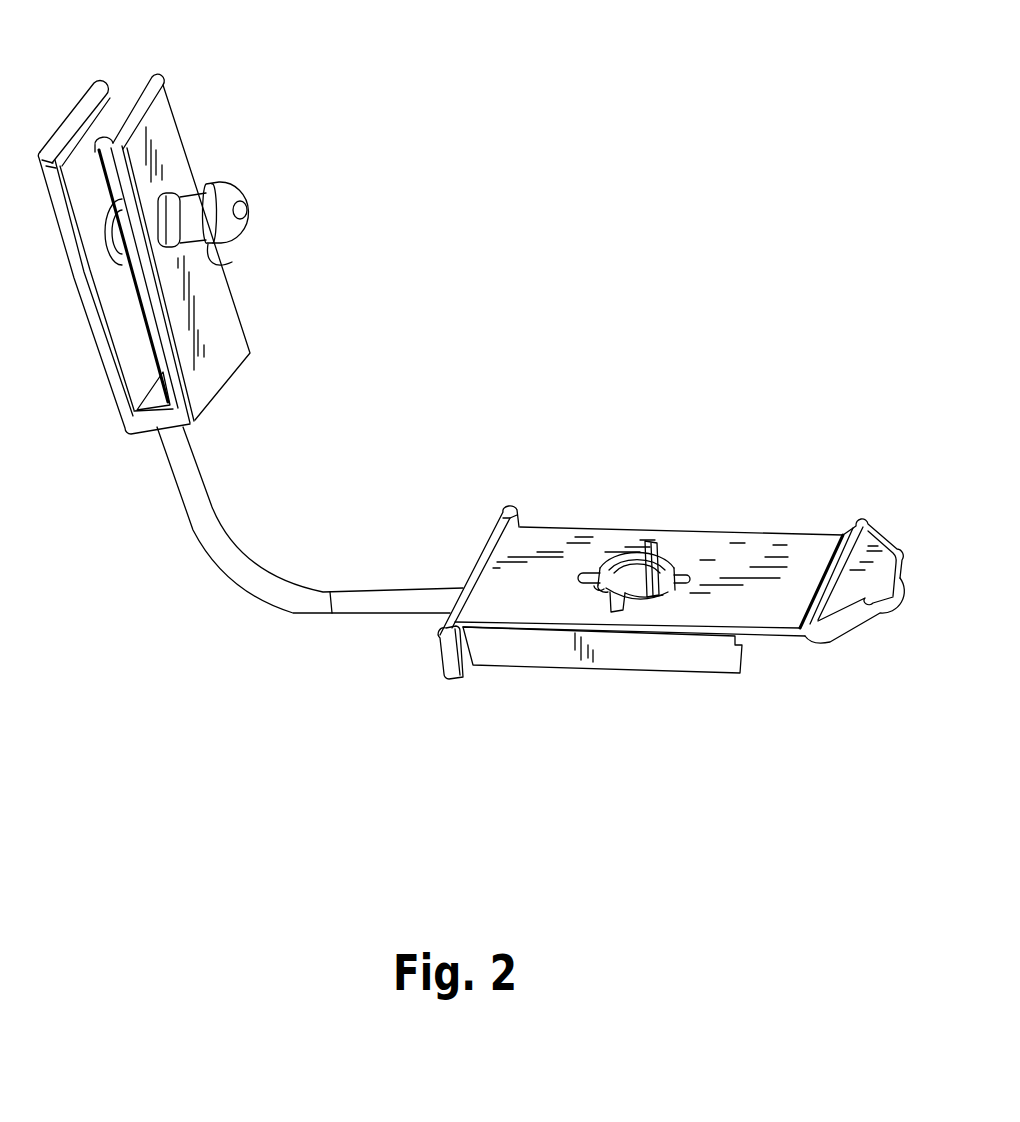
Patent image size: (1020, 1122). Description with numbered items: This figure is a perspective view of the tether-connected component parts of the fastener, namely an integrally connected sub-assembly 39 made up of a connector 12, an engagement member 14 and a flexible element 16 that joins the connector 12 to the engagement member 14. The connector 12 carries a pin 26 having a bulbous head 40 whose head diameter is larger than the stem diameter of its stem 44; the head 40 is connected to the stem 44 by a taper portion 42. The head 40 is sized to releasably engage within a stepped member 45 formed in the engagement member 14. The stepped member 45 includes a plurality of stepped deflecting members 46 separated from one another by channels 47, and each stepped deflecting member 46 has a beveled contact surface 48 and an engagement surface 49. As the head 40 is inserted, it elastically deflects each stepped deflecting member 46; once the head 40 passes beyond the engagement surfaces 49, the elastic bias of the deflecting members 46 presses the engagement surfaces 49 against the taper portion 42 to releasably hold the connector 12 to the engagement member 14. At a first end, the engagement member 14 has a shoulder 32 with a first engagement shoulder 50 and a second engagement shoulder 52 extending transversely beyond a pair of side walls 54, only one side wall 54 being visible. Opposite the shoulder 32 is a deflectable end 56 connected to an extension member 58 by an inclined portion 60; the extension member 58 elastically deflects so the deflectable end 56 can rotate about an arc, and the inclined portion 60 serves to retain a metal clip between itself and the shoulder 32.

The connector 12 is at (215, 310).
The engagement member 14 is at (740, 533).
The flexible element 16 is at (227, 555).
The pin 26 is at (261, 177).
The shoulder 32 is at (432, 628).
The integrally connected sub-assembly 39 is at (480, 401).
The bulbous head 40 is at (232, 232).
The taper portion 42 is at (221, 263).
The stem 44 is at (186, 211).
The stepped member 45 is at (648, 584).
The stepped deflecting member 46 is at (613, 611).
The channel 47 is at (652, 543).
The beveled contact surface 48 is at (673, 552).
The engagement surface 49 is at (637, 601).
The first engagement shoulder 50 is at (515, 508).
The second engagement shoulder 52 is at (460, 673).
The side wall 54 is at (657, 653).
The deflectable end 56 is at (852, 583).
The extension member 58 is at (797, 553).
The inclined portion 60 is at (850, 531).